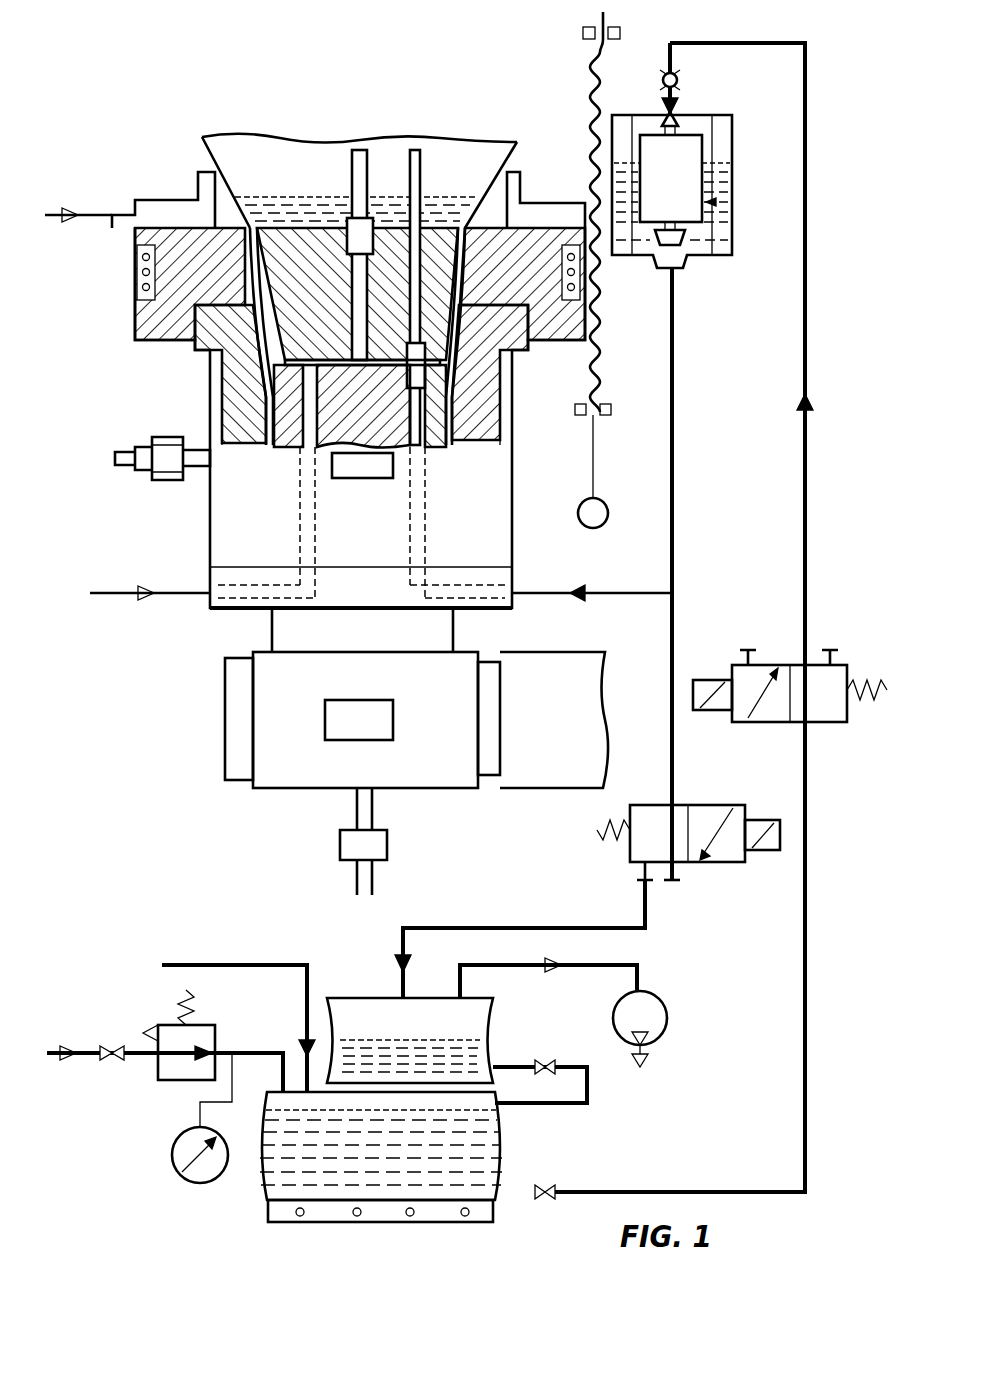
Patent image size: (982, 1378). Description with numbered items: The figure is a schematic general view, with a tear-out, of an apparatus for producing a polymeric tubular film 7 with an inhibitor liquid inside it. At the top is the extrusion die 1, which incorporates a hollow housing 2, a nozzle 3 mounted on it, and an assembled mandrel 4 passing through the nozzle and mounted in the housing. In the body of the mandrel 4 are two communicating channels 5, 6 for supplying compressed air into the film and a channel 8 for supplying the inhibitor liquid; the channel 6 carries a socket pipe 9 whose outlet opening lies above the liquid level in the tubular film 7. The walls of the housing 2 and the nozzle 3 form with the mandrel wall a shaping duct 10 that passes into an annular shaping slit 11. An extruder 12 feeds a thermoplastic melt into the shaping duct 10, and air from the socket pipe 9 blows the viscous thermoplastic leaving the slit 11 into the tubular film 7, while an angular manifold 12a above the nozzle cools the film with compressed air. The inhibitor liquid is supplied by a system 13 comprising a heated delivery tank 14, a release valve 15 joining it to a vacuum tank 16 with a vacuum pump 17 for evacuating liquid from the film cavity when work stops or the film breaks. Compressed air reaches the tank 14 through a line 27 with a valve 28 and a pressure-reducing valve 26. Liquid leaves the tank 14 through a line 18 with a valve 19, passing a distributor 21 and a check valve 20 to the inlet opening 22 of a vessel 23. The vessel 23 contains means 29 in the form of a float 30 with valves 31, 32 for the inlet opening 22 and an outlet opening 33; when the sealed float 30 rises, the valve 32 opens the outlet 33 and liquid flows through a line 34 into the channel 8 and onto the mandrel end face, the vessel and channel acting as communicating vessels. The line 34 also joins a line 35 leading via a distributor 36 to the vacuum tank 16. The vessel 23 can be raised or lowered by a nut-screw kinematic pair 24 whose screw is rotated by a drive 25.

The extrusion die 1 is at (198, 530).
The hollow housing 2 is at (228, 465).
The nozzle 3 is at (540, 340).
The assembled mandrel 4 is at (290, 232).
The channel 5 is at (300, 415).
The channel 6 is at (355, 270).
The polymeric tubular film 7 is at (230, 137).
The channel 8 is at (416, 230).
The socket pipe 9 is at (352, 175).
The shaping duct 10 is at (452, 440).
The annular shaping slit 11 is at (245, 250).
The extruder 12 is at (270, 697).
The angular manifold 12a is at (180, 210).
The inhibitor liquid supply system 13 is at (815, 800).
The heated delivery tank 14 is at (500, 1132).
The release valve 15 is at (545, 1063).
The vacuum tank 16 is at (357, 997).
The vacuum pump 17 is at (660, 1005).
The line 18 is at (808, 950).
The valve 19 is at (555, 1190).
The check valve 20 is at (663, 80).
The distributor 21 is at (822, 718).
The inlet opening 22 is at (680, 108).
The vessel 23 is at (730, 232).
The kinematic pair nut-screw 24 is at (585, 165).
The drive 25 is at (600, 523).
The pressure-reducing valve 26 is at (175, 1028).
The line 27 is at (140, 1053).
The valve 28 is at (118, 1062).
The means 29 is at (718, 207).
The float 30 is at (690, 183).
The valve 31 is at (678, 122).
The valve 32 is at (688, 243).
The outlet opening 33 is at (678, 262).
The line 34 is at (675, 485).
The line 35 is at (675, 633).
The distributor 36 is at (722, 870).